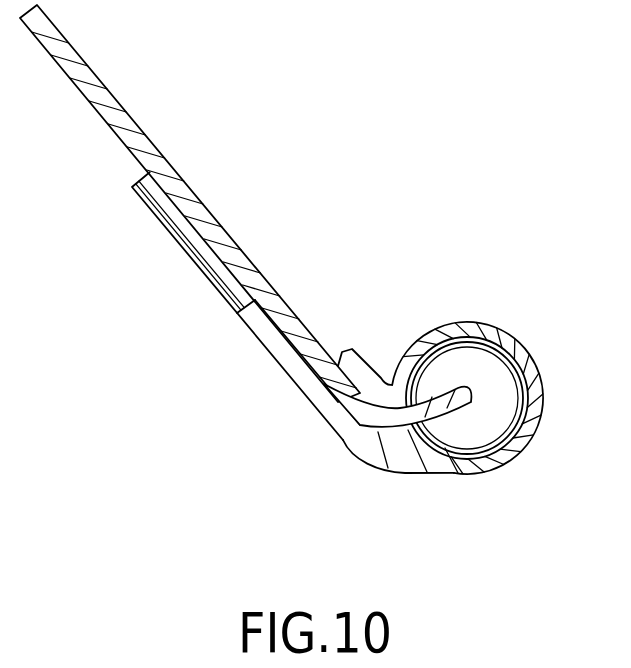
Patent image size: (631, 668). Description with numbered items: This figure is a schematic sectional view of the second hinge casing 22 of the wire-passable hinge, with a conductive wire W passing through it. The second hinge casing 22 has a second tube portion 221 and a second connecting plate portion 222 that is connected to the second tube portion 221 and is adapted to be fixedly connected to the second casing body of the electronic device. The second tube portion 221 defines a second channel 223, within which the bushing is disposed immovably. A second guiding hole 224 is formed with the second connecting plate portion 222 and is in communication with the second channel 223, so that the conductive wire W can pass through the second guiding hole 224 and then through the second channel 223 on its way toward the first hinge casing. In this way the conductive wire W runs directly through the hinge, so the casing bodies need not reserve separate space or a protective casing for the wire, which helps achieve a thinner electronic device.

The conductive wire W is at (127, 114).
The second hinge casing 22 is at (371, 350).
The second tube portion 221 is at (537, 373).
The second connecting plate portion 222 is at (275, 352).
The second channel 223 is at (478, 375).
The second guiding hole 224 is at (378, 430).